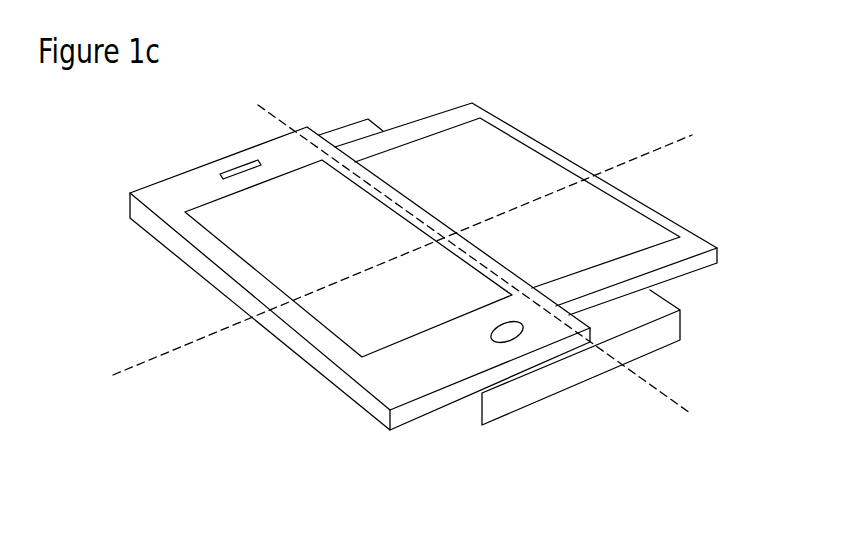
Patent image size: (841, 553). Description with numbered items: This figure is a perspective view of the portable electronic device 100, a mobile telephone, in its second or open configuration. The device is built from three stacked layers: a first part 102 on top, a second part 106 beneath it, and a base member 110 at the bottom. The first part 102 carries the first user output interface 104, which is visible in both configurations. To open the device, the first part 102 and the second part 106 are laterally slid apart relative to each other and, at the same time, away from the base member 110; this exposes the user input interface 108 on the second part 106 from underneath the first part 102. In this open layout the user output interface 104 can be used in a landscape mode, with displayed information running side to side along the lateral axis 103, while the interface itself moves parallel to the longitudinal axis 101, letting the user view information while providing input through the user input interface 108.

The portable electronic device 100 is at (597, 140).
The longitudinal axis 101 is at (653, 390).
The first part 102 is at (344, 303).
The lateral axis 103 is at (160, 357).
The first user output interface 104 is at (268, 242).
The second part 106 is at (553, 212).
The user input interface 108 is at (605, 222).
The base member 110 is at (675, 342).